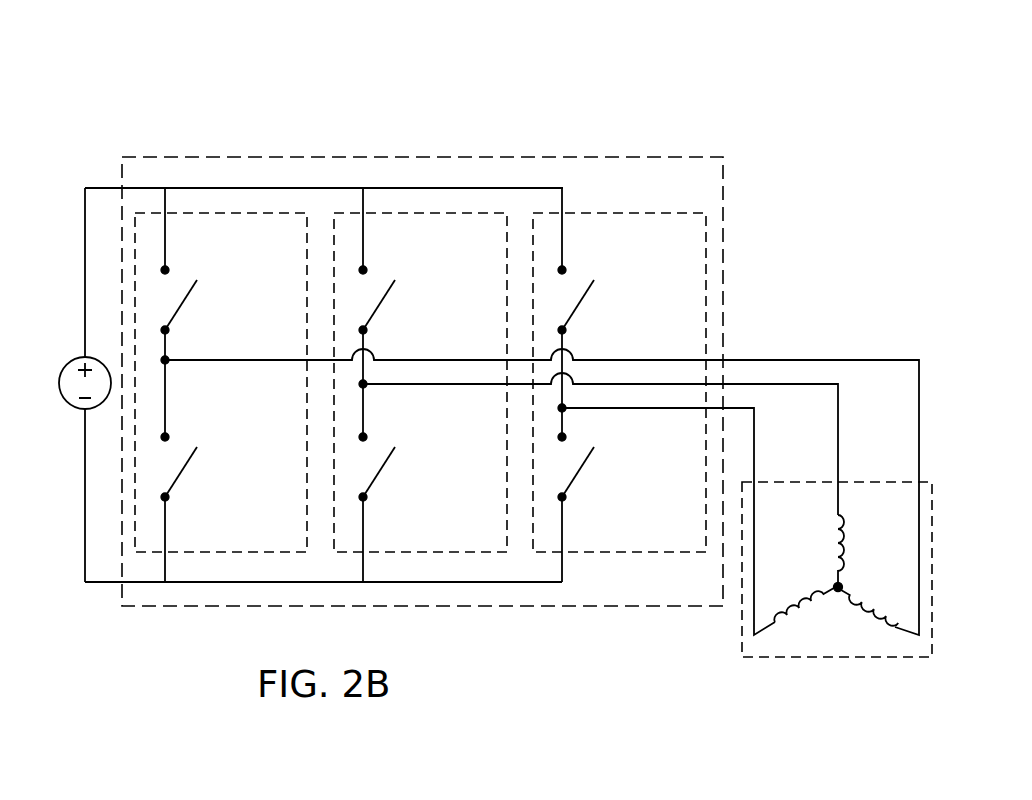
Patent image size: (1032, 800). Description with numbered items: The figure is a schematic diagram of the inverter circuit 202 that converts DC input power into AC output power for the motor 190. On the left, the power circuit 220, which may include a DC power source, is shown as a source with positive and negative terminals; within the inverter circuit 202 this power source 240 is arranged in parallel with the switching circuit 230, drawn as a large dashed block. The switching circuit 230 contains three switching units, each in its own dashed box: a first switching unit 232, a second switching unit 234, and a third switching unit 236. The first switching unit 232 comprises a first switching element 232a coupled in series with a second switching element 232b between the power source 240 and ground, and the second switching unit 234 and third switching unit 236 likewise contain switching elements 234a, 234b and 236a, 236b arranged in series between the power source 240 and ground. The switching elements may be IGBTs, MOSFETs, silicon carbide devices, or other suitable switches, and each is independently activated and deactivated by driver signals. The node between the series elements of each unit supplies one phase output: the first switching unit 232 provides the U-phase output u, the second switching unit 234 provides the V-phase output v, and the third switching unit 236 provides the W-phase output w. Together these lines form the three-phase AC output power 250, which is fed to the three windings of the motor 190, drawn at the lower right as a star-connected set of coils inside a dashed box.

The inverter circuit 202 is at (164, 97).
The power circuit 220 is at (56, 358).
The switching circuit 230 is at (616, 157).
The first switching unit 232 is at (214, 552).
The first switching element 232a is at (184, 302).
The second switching element 232b is at (187, 462).
The second switching unit 234 is at (414, 552).
The switching element 234a is at (384, 302).
The switching element 234b is at (387, 462).
The third switching unit 236 is at (612, 552).
The switching element 236a is at (586, 302).
The switching element 236b is at (586, 462).
The power source 240 is at (72, 410).
The three-phase AC output power 250 is at (878, 476).
The motor 190 is at (740, 640).
The U-phase output u is at (879, 361).
The V-phase output v is at (815, 384).
The W-phase output w is at (733, 408).